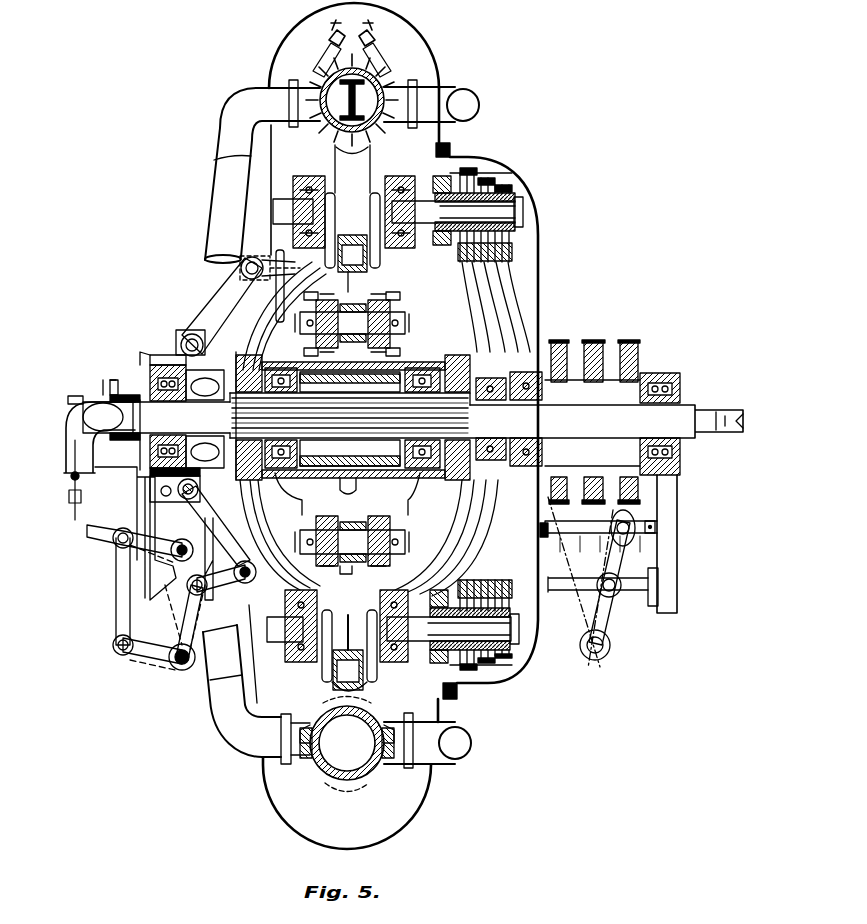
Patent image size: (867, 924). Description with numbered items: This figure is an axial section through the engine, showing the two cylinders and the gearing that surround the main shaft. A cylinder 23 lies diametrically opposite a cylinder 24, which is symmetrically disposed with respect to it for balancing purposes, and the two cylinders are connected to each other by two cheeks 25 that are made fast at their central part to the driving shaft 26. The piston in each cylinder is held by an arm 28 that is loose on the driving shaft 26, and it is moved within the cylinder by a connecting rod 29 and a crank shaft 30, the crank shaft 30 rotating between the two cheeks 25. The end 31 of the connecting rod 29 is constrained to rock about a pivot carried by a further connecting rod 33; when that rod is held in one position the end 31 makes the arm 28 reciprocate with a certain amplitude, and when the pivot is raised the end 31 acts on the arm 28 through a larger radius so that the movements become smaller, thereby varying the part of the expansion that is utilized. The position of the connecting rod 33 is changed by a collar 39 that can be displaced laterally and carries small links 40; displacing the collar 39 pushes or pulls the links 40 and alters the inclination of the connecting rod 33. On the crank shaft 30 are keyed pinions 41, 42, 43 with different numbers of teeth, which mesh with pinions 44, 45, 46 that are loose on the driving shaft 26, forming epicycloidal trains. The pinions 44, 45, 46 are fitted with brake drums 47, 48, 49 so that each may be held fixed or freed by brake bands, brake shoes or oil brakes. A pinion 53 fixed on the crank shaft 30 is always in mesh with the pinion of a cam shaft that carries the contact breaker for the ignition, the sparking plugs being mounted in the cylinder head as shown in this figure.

The cylinder 23 is at (352, 87).
The cylinder 24 is at (347, 744).
The cheeks 25 is at (462, 335).
The driving shaft 26 is at (413, 420).
The arm 28 is at (398, 344).
The connecting rod 29 is at (360, 270).
The crank shaft 30 is at (395, 419).
The end of the connecting rod 31 is at (352, 434).
The connecting rod 33 is at (241, 268).
The collar 39 is at (150, 358).
The links 40 is at (186, 330).
The pinion 41 is at (472, 168).
The pinion 42 is at (488, 178).
The pinion 43 is at (506, 185).
The pinion 44 is at (470, 282).
The pinion 45 is at (485, 298).
The pinion 46 is at (512, 300).
The brake drum 47 is at (632, 342).
The brake drum 48 is at (598, 342).
The brake drum 49 is at (562, 342).
The pinion 53 is at (440, 178).